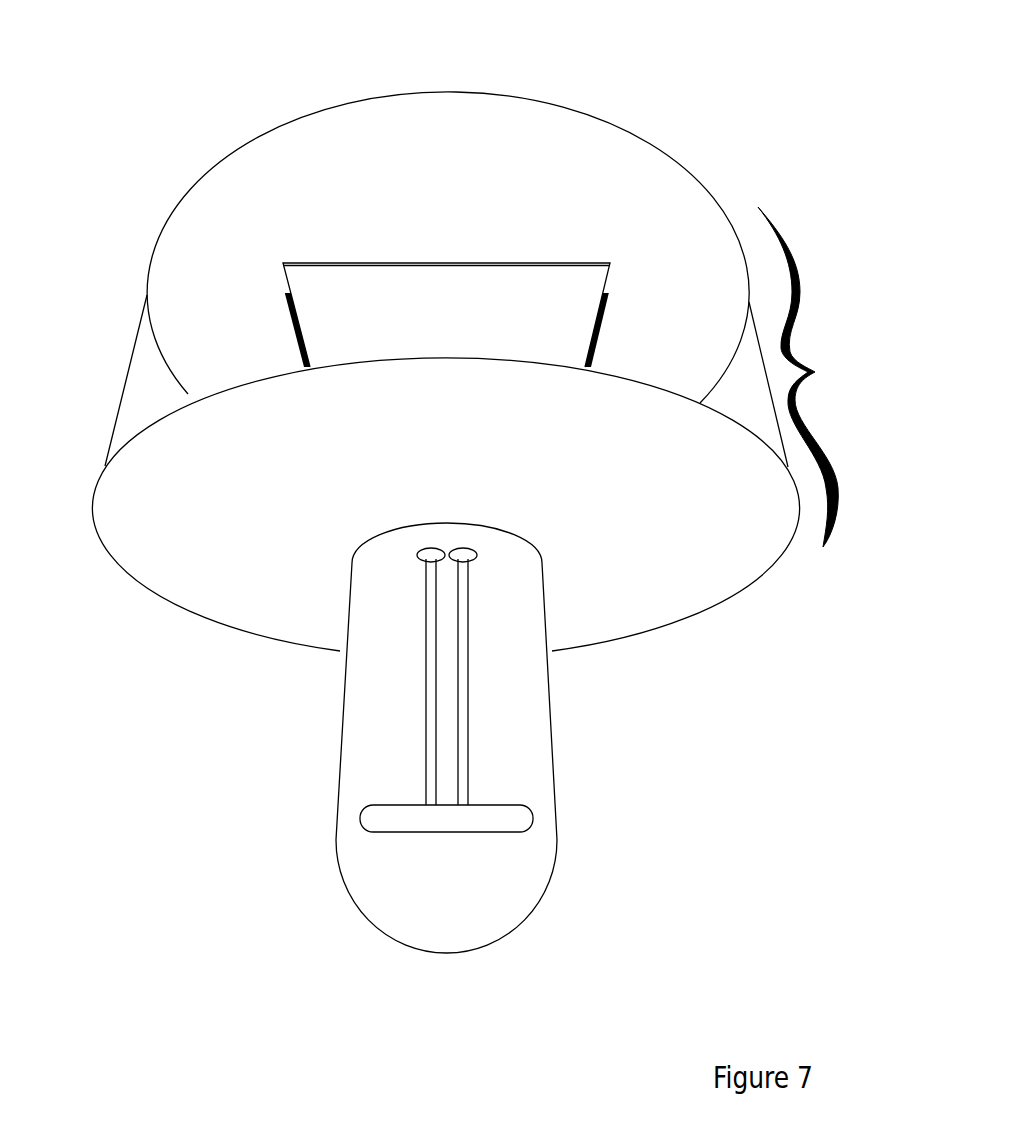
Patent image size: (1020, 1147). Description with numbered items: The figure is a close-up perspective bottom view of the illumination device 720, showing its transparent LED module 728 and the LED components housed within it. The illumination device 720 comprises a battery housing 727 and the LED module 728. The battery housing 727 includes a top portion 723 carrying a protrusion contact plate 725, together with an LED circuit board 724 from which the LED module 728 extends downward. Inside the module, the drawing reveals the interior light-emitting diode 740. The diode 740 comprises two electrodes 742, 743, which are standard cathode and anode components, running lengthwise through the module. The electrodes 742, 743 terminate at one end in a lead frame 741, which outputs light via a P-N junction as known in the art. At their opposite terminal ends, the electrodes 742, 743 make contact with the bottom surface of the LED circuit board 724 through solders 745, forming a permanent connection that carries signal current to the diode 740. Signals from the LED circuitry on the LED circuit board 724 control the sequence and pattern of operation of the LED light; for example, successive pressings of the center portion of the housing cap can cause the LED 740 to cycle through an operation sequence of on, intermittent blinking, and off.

The illumination device 720 is at (152, 78).
The top portion 723 is at (535, 101).
The LED circuit board 724 is at (217, 620).
The protrusion contact plate 725 is at (373, 273).
The battery housing 727 is at (806, 377).
The LED module 728 is at (490, 935).
The light-emitting diode 740 is at (502, 768).
The lead frame 741 is at (430, 823).
The electrode 742 is at (426, 712).
The electrode 743 is at (468, 680).
The solders 745 is at (418, 555).